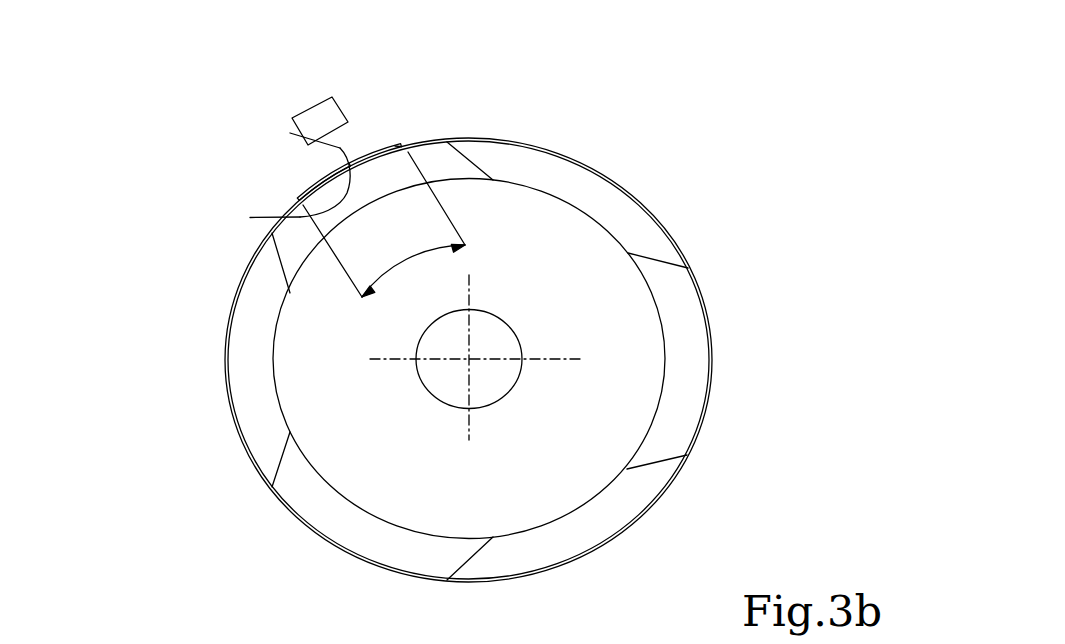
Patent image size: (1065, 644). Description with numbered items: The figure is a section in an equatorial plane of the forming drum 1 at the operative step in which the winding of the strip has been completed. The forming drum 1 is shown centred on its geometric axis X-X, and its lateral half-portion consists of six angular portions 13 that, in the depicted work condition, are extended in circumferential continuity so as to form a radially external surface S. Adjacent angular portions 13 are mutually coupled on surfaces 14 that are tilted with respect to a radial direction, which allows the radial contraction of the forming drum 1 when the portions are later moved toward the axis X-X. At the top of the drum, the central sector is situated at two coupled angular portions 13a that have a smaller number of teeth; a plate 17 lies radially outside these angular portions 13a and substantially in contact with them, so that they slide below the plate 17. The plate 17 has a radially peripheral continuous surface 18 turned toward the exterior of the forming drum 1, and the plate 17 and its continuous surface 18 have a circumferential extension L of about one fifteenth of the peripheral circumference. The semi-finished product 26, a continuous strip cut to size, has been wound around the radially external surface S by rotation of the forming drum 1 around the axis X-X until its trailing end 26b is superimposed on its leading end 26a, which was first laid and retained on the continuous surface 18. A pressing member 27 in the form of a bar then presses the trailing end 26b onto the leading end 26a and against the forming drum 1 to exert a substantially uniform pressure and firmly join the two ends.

The forming drum 1 is at (778, 130).
The angular portions 13 is at (595, 170).
The angular portions 13a is at (430, 137).
The surfaces 14 is at (473, 557).
The plate 17 is at (312, 183).
The continuous surface 18 is at (380, 147).
The semi-finished product 26 is at (655, 208).
The leading end 26a is at (250, 218).
The trailing end 26b is at (290, 133).
The pressing member 27 is at (310, 107).
The radially external surface S is at (710, 325).
The circumferential extension L is at (413, 259).
The geometric axis X-X is at (468, 359).